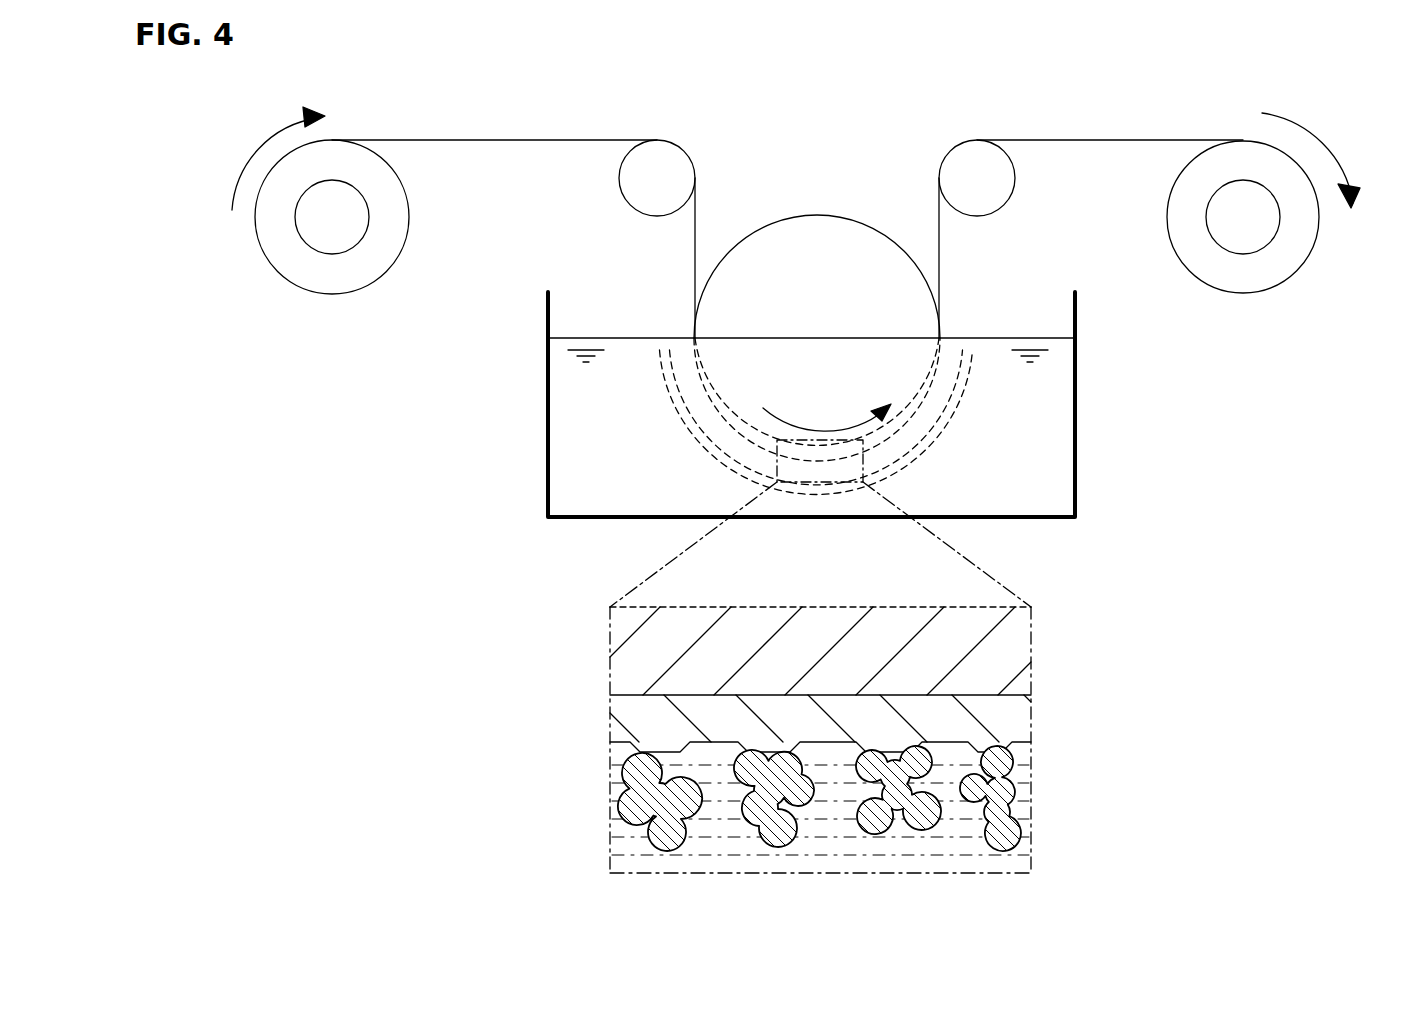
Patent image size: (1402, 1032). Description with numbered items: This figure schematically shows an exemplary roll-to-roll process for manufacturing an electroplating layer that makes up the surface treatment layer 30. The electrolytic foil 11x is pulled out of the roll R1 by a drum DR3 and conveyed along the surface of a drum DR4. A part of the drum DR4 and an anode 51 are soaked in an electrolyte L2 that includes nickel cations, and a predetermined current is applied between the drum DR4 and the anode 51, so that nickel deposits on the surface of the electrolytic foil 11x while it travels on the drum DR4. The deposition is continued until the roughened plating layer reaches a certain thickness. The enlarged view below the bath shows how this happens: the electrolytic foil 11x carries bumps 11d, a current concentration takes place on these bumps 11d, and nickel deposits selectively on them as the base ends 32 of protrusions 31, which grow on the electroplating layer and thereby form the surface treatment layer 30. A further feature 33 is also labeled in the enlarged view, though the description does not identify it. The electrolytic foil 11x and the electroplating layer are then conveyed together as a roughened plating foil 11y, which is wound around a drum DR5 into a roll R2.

The electrolytic foil 11x is at (494, 138).
The roughened plating foil 11y is at (1104, 138).
The bumps 11d is at (1015, 752).
The drum DR3 is at (332, 256).
The drum DR4 is at (822, 214).
The drum DR5 is at (1243, 256).
The roll R1 is at (254, 272).
The roll R2 is at (1330, 272).
The anode 51 is at (988, 366).
The electrolyte L2 is at (1060, 432).
The surface treatment layer 30 is at (618, 792).
The protrusions 31 is at (653, 808).
The base ends 32 is at (1017, 763).
The liquid layer surface 33 is at (1017, 868).